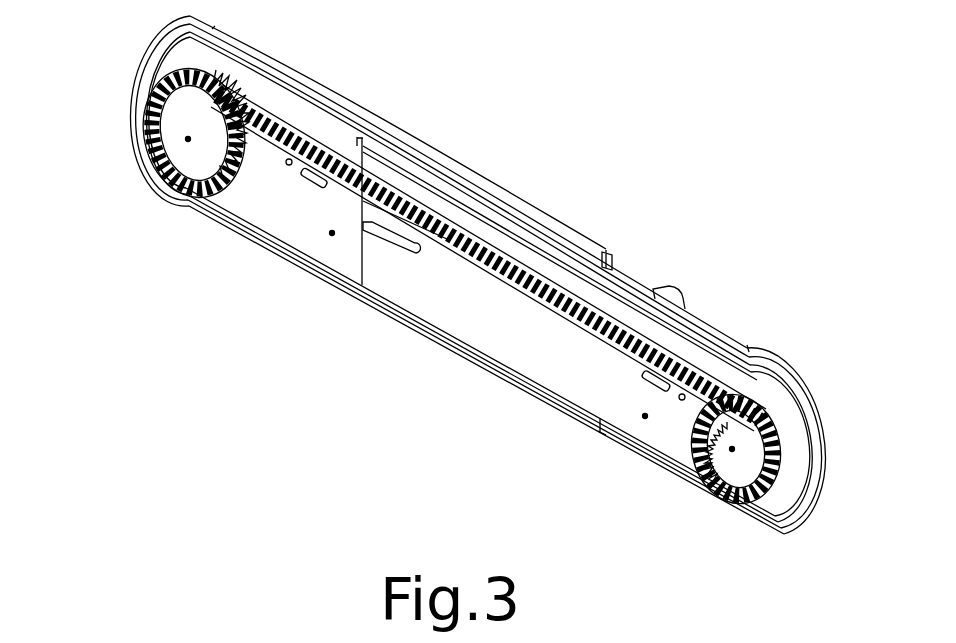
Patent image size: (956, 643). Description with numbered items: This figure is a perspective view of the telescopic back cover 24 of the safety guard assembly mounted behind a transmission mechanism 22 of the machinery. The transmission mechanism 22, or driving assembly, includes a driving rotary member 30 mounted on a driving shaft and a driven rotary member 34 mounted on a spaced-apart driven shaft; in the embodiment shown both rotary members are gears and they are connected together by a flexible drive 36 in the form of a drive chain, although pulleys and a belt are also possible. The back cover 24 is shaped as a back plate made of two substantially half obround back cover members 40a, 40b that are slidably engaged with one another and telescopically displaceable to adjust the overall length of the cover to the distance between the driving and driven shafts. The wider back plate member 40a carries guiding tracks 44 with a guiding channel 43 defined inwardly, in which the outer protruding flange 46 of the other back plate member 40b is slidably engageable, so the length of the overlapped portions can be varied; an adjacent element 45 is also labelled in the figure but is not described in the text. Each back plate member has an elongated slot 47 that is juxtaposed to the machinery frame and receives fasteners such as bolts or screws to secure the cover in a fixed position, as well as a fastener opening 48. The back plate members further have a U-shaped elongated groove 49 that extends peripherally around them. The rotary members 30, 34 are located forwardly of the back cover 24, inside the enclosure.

The transmission mechanism 22 is at (461, 285).
The telescopic back cover 24 is at (492, 182).
The driving rotary member 30 is at (732, 451).
The driven rotary member 34 is at (186, 141).
The flexible drive 36 is at (668, 350).
The back cover member 40a is at (332, 236).
The back cover member 40b is at (645, 418).
The guiding channel 43 is at (605, 258).
The guiding tracks 44 is at (604, 268).
The rail segment 45 is at (622, 277).
The outer protruding flange 46 is at (672, 289).
The elongated slot 47 is at (312, 184).
The fastener opening 48 is at (286, 165).
The U-shaped elongated groove 49 is at (808, 402).